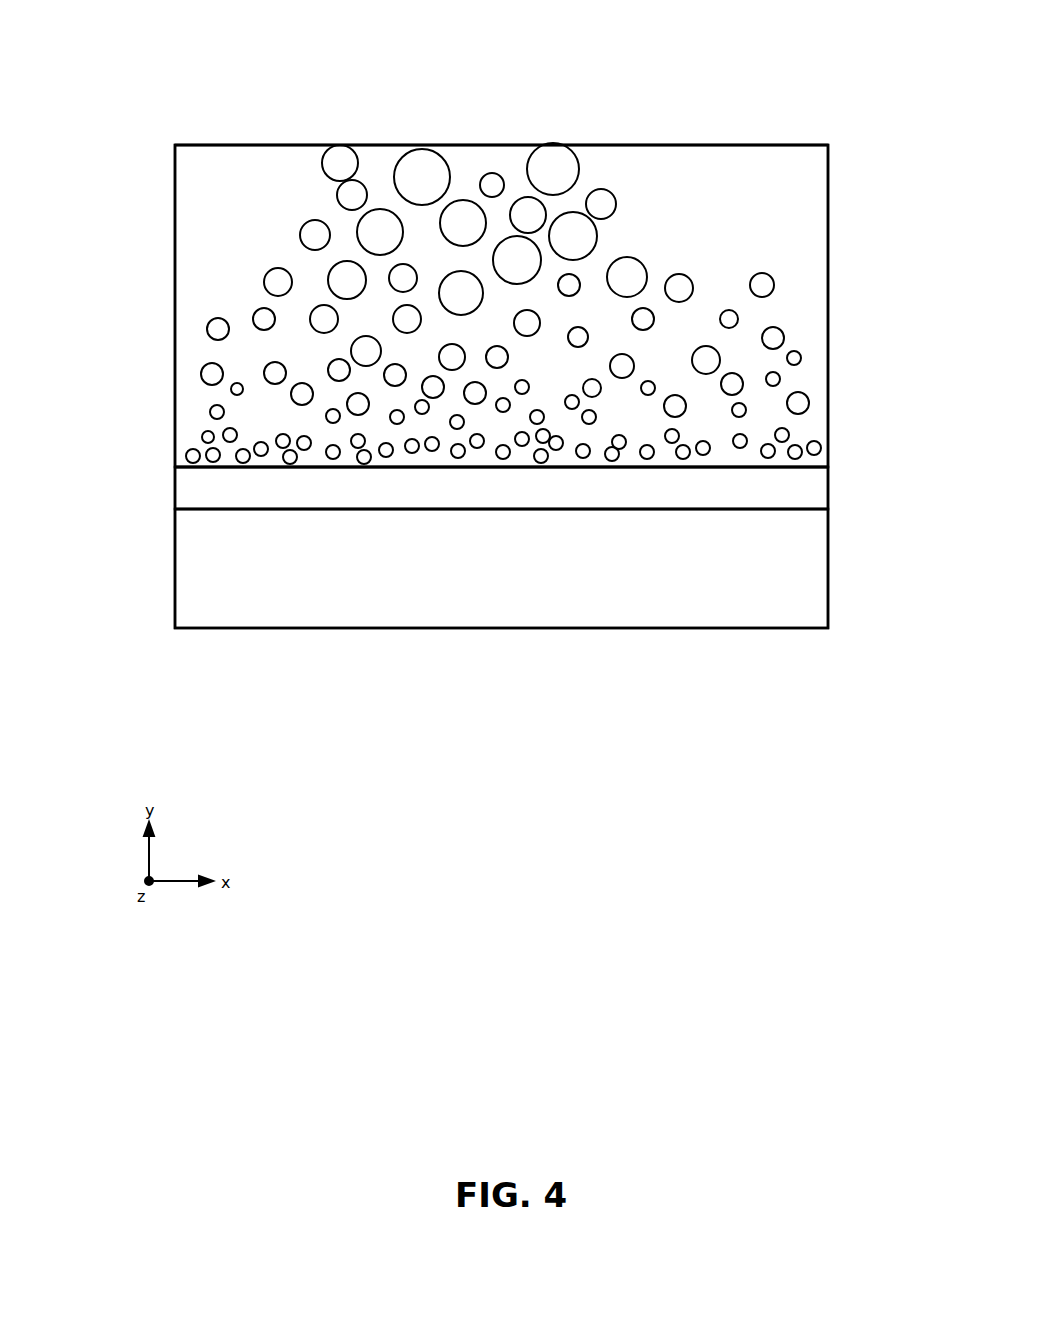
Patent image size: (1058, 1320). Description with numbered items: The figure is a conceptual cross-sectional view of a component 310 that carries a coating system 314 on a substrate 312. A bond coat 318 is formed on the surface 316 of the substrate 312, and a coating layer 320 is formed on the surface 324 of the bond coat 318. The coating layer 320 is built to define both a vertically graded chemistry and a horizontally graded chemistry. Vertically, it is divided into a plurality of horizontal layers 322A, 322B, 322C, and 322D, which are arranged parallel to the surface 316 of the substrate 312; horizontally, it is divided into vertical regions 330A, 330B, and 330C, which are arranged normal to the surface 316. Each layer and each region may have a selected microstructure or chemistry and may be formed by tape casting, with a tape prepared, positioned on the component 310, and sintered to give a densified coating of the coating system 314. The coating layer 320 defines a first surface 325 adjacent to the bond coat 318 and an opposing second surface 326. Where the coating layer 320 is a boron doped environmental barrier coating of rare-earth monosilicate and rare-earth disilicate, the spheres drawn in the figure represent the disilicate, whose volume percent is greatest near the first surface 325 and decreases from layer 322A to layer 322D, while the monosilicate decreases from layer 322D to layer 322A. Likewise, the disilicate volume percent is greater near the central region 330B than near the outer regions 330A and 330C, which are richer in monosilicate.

The component 310 is at (98, 76).
The substrate 312 is at (174, 611).
The coating system 314 is at (175, 145).
The surface of substrate 316 is at (793, 510).
The bond coat 318 is at (174, 498).
The coating layer 320 is at (169, 212).
The first horizontal layer 322A is at (829, 425).
The second horizontal layer 322B is at (829, 357).
The third horizontal layer 322C is at (829, 253).
The fourth horizontal layer 322D is at (829, 145).
The surface of bond coat 324 is at (813, 468).
The first surface 325 is at (186, 464).
The second surface 326 is at (205, 143).
The first vertical region 330A is at (311, 145).
The second vertical region 330B is at (641, 145).
The third vertical region 330C is at (827, 145).